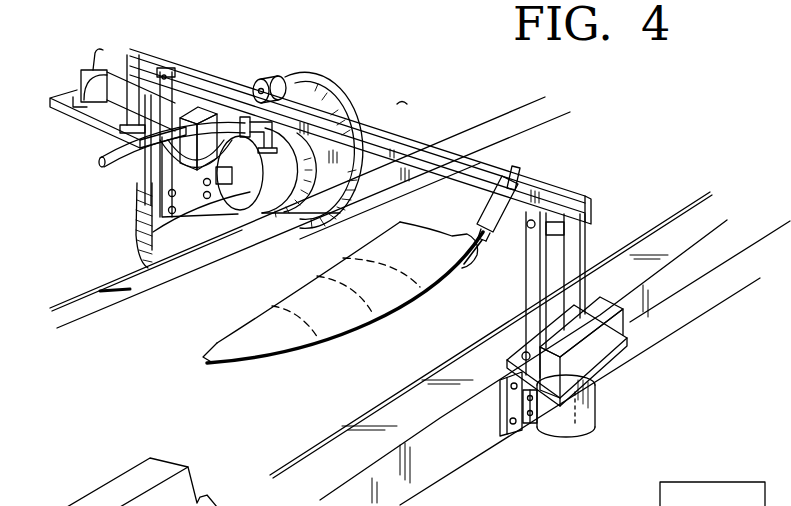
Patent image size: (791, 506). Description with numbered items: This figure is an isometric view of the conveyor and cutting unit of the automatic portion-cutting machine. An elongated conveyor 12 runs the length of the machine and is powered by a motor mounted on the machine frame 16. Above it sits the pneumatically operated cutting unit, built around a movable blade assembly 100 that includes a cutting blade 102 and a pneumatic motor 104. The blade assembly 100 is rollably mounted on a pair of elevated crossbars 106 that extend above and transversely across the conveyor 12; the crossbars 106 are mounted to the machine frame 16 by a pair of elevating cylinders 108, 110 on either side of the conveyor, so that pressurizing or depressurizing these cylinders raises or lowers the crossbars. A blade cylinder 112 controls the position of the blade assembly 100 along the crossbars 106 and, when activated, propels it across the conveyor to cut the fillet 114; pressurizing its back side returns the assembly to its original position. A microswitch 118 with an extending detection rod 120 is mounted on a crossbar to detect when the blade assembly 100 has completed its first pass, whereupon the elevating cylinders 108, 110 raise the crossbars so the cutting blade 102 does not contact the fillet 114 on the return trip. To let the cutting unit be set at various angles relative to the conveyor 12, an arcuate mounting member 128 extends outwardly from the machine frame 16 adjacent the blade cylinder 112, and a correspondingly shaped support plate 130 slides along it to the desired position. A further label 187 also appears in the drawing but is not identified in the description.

The conveyor 12 is at (107, 313).
The machine frame 16 is at (653, 297).
The movable blade assembly 100 is at (330, 103).
The cutting blade 102 is at (316, 215).
The pneumatic motor 104 is at (253, 200).
The elevated crossbars 106 is at (570, 196).
The elevating cylinder 108 is at (583, 413).
The elevating cylinder 110 is at (122, 180).
The blade cylinder 112 is at (115, 95).
The fillet 114 is at (205, 347).
The microswitch 118 is at (523, 190).
The detection rod 120 is at (470, 256).
The arcuate mounting member 128 is at (137, 230).
The support plate 130 is at (188, 197).
The air supply line 187 is at (680, 494).